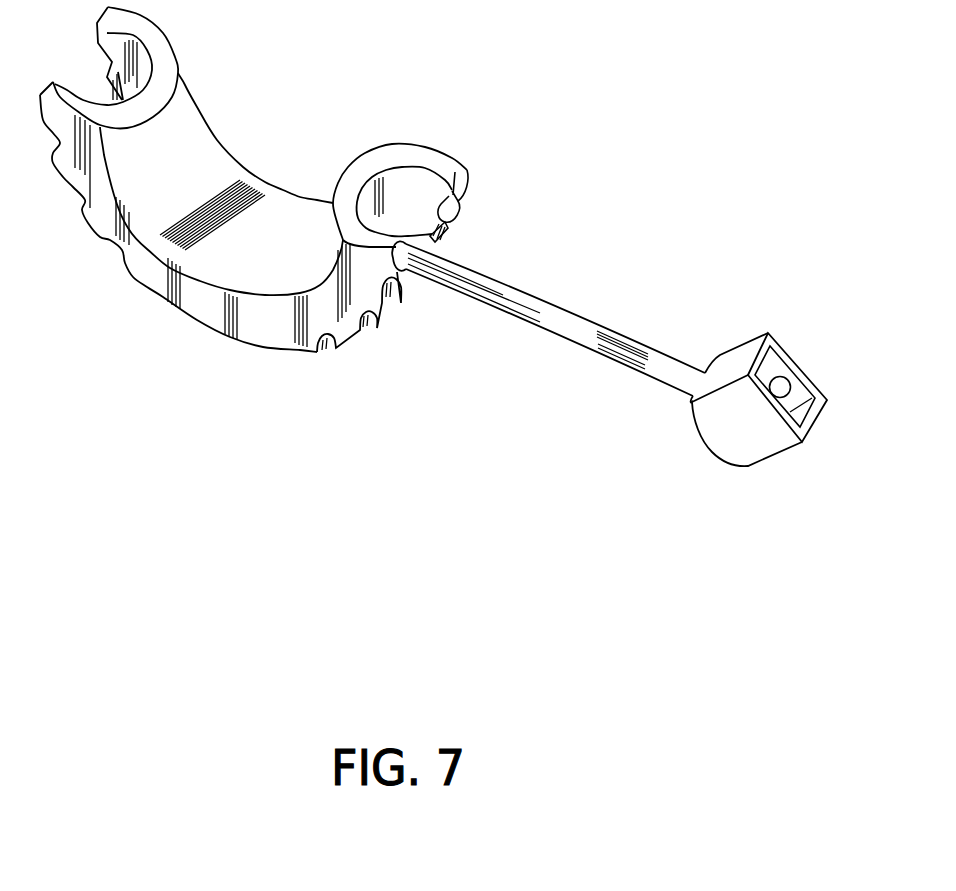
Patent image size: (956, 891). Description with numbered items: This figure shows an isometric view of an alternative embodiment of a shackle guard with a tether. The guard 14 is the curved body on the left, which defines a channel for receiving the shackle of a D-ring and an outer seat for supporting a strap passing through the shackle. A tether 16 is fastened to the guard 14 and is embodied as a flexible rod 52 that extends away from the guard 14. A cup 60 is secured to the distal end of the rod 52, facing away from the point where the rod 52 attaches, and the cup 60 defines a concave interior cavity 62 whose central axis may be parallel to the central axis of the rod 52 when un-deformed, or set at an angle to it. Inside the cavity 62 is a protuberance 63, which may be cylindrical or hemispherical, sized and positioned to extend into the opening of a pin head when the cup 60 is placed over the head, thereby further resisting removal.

The guard 14 is at (264, 157).
The tether 16 is at (543, 290).
The flexible rod 52 is at (528, 320).
The cup 60 is at (745, 353).
The concave interior cavity 62 is at (773, 367).
The protuberance 63 is at (787, 388).